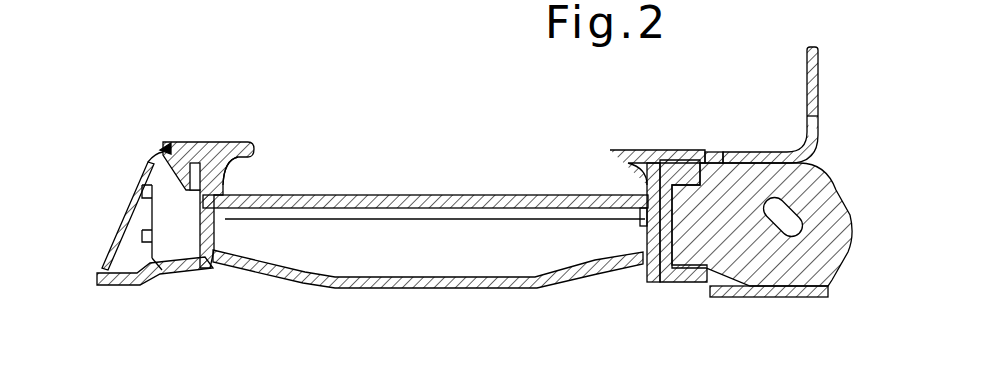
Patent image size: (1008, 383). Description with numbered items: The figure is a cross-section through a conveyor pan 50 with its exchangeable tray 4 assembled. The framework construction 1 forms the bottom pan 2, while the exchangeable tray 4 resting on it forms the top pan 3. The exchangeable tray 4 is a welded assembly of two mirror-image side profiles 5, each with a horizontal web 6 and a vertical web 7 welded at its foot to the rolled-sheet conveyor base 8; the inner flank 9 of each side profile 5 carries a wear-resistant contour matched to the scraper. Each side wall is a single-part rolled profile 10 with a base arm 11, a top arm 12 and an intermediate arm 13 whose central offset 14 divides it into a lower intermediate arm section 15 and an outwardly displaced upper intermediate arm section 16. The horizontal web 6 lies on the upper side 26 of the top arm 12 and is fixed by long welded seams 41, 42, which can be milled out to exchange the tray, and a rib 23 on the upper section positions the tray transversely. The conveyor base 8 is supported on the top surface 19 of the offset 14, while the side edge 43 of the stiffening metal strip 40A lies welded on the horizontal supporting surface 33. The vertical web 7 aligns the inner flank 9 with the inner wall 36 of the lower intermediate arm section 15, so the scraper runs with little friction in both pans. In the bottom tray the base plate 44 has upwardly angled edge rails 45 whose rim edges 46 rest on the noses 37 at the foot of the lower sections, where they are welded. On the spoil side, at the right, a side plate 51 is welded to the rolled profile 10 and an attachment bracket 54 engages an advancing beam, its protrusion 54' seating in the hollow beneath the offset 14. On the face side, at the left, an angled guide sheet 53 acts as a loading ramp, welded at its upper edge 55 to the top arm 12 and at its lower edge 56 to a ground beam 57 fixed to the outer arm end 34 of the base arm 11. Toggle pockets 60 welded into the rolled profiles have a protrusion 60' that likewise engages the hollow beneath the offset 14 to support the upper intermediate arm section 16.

The framework construction 1 is at (212, 312).
The bottom pan 2 is at (439, 258).
The top pan 3 is at (439, 179).
The exchangeable tray 4 is at (578, 152).
The side profile 5 is at (223, 141).
The horizontal web 6 is at (174, 143).
The vertical web 7 is at (227, 180).
The conveyor base 8 is at (490, 194).
The inner flank 9 is at (243, 163).
The rolled profile 10 is at (162, 292).
The base arm 11 is at (183, 273).
The top arm 12 is at (152, 152).
The intermediate arm 13 is at (107, 250).
The offset 14 is at (170, 220).
The lower intermediate arm section 15 is at (217, 238).
The upper intermediate arm section 16 is at (188, 178).
The top surface of the offset 19 is at (727, 205).
The rib 23 is at (200, 143).
The upper side of the top arm 26 is at (182, 143).
The horizontal supporting surface 33 is at (648, 232).
The outer arm end 34 is at (130, 286).
The inner wall of the lower intermediate arm section 36 is at (220, 253).
The nose 37 is at (218, 270).
The metal strip 40A is at (503, 218).
The welded seam 41 is at (152, 143).
The welded joint 42 is at (703, 150).
The side edge 43 is at (297, 197).
The base plate 44 is at (437, 281).
The edge rail 45 is at (300, 279).
The rim edge 46 is at (636, 266).
The conveyor pan 50 is at (130, 64).
The side plate 51 is at (773, 150).
The guide sheet 53 is at (103, 240).
The attachment bracket 54 is at (805, 270).
The protrusion 54' is at (759, 306).
The upper edge 55 is at (150, 162).
The lower edge 56 is at (186, 228).
The ground beam 57 is at (113, 286).
The toggle pocket 60 is at (112, 224).
The protrusion 60' is at (233, 319).